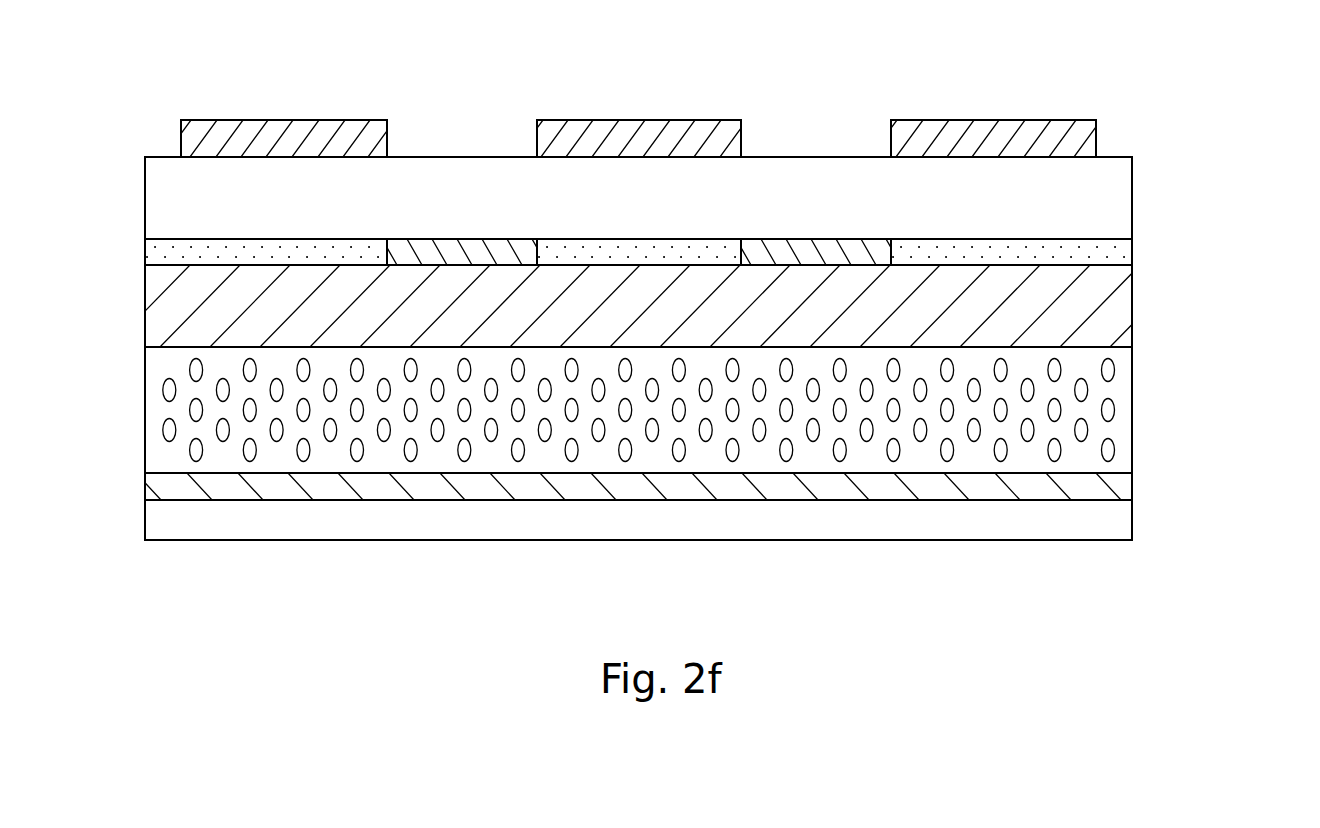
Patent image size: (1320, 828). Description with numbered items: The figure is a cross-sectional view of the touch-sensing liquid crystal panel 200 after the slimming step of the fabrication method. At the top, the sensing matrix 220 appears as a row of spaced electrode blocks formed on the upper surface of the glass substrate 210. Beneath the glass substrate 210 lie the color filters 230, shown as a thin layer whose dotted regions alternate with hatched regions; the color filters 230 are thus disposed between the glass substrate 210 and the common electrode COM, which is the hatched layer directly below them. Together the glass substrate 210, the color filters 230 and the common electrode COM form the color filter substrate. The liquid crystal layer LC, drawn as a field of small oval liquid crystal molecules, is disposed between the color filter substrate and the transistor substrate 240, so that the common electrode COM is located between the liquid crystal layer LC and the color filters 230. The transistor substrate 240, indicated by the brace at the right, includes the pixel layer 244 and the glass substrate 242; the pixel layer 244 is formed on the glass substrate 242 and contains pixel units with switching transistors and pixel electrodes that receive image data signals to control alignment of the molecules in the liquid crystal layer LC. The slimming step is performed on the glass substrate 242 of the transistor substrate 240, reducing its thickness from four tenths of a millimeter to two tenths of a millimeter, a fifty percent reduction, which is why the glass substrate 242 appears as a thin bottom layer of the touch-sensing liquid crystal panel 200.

The touch-sensing liquid crystal panel 200 is at (122, 79).
The sensing matrix 220 is at (1082, 137).
The glass substrate 210 is at (1118, 198).
The color filters 230 is at (1168, 256).
The common electrode COM is at (1117, 305).
The liquid crystal layer LC is at (1118, 403).
The pixel layer 244 is at (1122, 486).
The glass substrate 242 is at (1123, 520).
The transistor substrate 240 is at (726, 499).